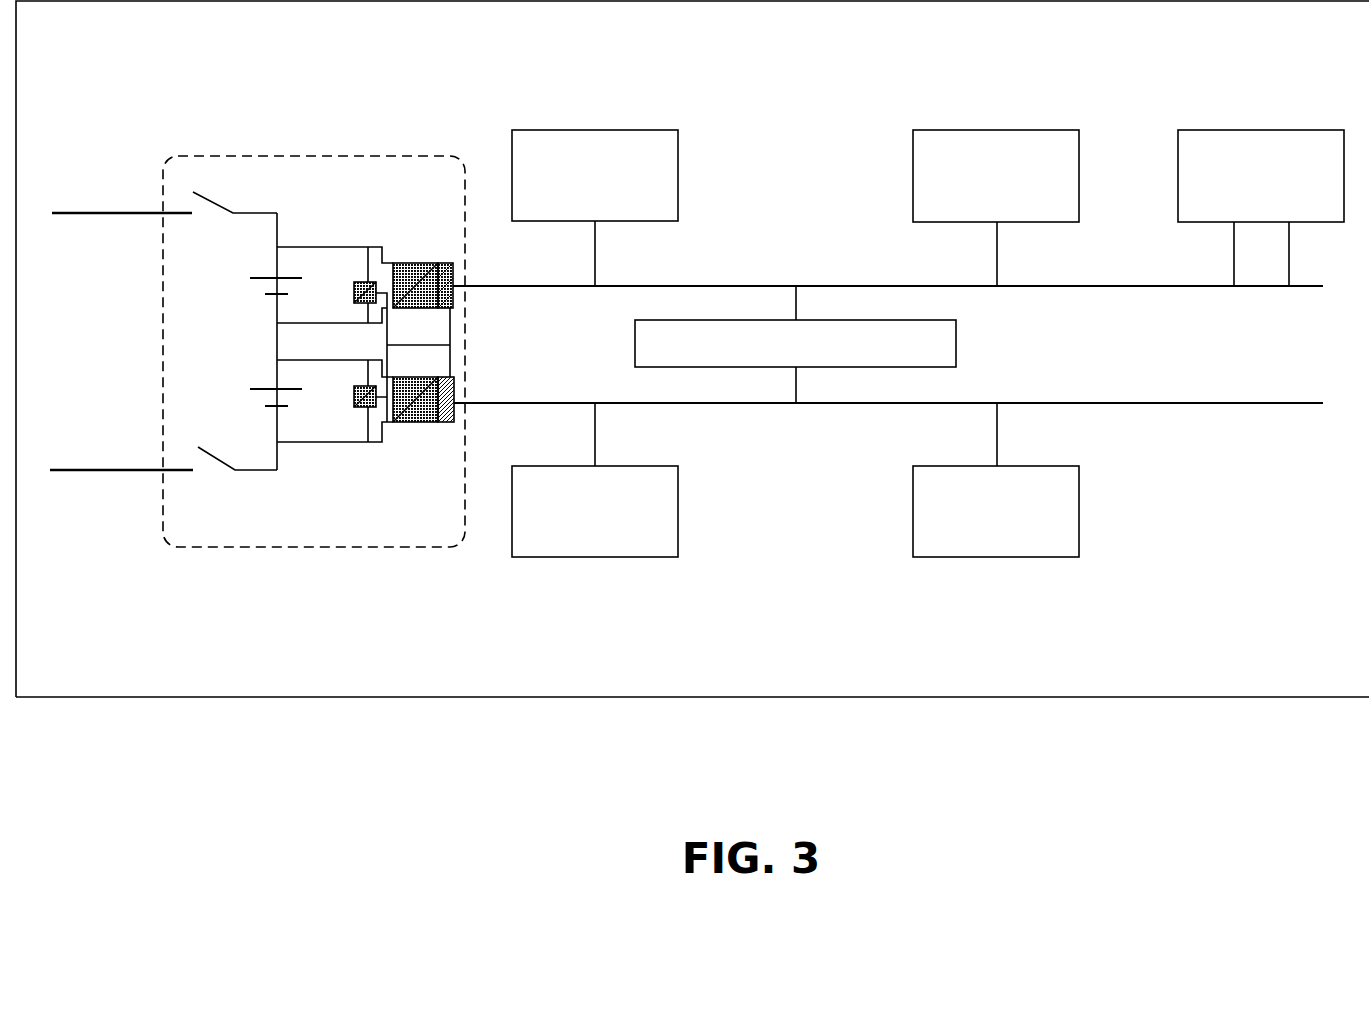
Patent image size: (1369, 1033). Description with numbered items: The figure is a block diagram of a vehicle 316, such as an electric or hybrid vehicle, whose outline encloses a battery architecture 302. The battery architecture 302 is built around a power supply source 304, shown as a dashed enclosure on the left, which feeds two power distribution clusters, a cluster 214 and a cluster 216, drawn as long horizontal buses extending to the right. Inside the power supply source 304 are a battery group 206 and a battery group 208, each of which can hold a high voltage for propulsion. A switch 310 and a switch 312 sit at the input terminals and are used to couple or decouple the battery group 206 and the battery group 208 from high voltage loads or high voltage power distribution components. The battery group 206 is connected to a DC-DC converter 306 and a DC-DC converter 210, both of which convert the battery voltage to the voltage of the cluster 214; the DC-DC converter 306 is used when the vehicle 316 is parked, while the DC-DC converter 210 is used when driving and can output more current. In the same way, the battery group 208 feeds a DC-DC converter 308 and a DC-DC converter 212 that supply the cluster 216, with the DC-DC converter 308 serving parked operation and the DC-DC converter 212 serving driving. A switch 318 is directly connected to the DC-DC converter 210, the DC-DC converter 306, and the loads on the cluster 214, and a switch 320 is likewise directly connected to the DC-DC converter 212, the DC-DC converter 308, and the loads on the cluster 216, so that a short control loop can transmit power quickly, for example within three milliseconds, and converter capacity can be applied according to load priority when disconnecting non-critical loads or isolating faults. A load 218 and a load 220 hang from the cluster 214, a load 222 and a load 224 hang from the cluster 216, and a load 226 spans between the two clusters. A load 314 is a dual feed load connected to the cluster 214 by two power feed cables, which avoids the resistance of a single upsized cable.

The battery group 206 is at (256, 264).
The battery group 208 is at (263, 419).
The DC-DC converter 210 is at (413, 256).
The DC-DC converter 212 is at (427, 431).
The cluster 214 is at (716, 285).
The cluster 216 is at (754, 404).
The load 218 is at (595, 208).
The load 220 is at (996, 208).
The load 222 is at (595, 480).
The load 224 is at (996, 480).
The load 226 is at (795, 344).
The battery architecture 302 is at (1122, 73).
The power supply source 304 is at (410, 156).
The DC-DC converter 306 is at (356, 270).
The DC-DC converter 308 is at (370, 412).
The switch 310 is at (190, 201).
The switch 312 is at (205, 472).
The load 314 is at (1261, 208).
The vehicle 316 is at (1027, 698).
The switch 318 is at (447, 252).
The switch 320 is at (452, 431).